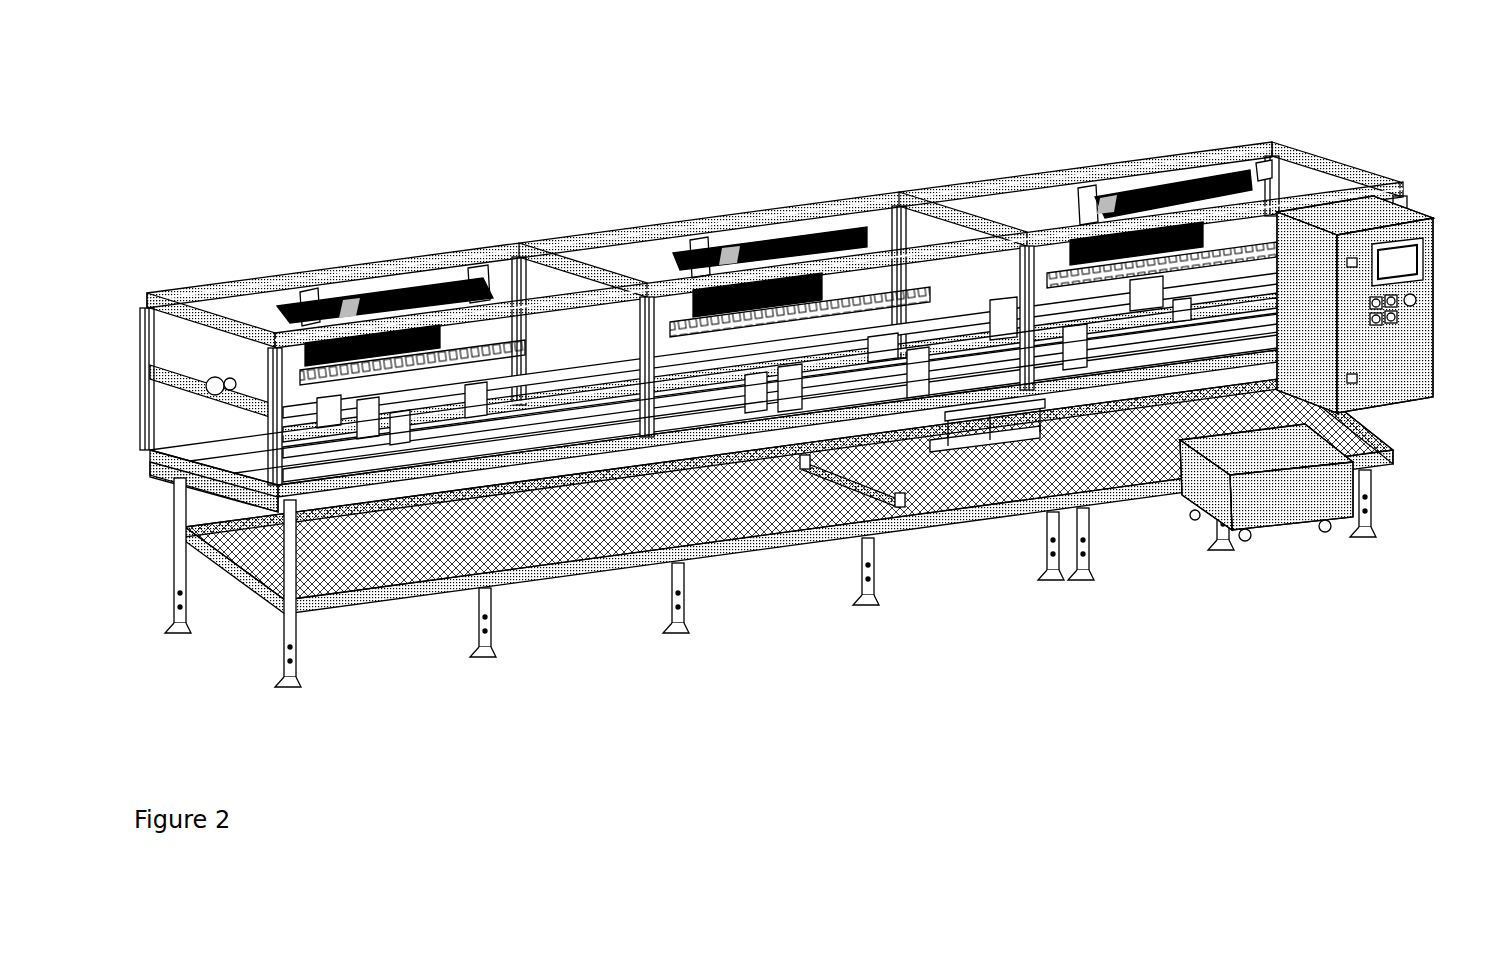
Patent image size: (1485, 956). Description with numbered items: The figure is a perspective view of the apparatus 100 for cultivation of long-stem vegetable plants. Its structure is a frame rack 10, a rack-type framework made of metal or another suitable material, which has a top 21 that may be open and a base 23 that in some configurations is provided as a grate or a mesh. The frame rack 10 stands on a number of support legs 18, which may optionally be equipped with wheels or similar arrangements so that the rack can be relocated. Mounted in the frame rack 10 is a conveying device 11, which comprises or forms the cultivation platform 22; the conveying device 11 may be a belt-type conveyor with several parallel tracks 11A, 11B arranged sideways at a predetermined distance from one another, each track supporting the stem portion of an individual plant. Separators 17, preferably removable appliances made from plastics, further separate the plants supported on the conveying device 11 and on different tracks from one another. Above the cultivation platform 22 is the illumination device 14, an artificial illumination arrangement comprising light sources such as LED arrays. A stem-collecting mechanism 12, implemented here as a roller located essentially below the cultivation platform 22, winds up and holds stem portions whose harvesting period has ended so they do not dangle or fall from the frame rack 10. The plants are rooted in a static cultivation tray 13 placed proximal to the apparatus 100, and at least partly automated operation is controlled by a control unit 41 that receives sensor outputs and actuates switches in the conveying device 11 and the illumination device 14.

The apparatus for cultivation of long-stem vegetable plants 100 is at (1400, 67).
The frame rack 10 is at (805, 197).
The conveying device 11 is at (651, 494).
The conveyor track 11A is at (343, 440).
The conveyor track 11B is at (383, 455).
The stem-collecting mechanism 12 is at (840, 487).
The cultivation tray 13 is at (1297, 505).
The illumination device 14 is at (690, 262).
The separator 17 is at (877, 372).
The support legs 18 is at (1092, 543).
The top of the frame rack 21 is at (143, 290).
The cultivation platform 22 is at (184, 441).
The base of the frame rack 23 is at (334, 619).
The control unit 41 is at (1395, 382).